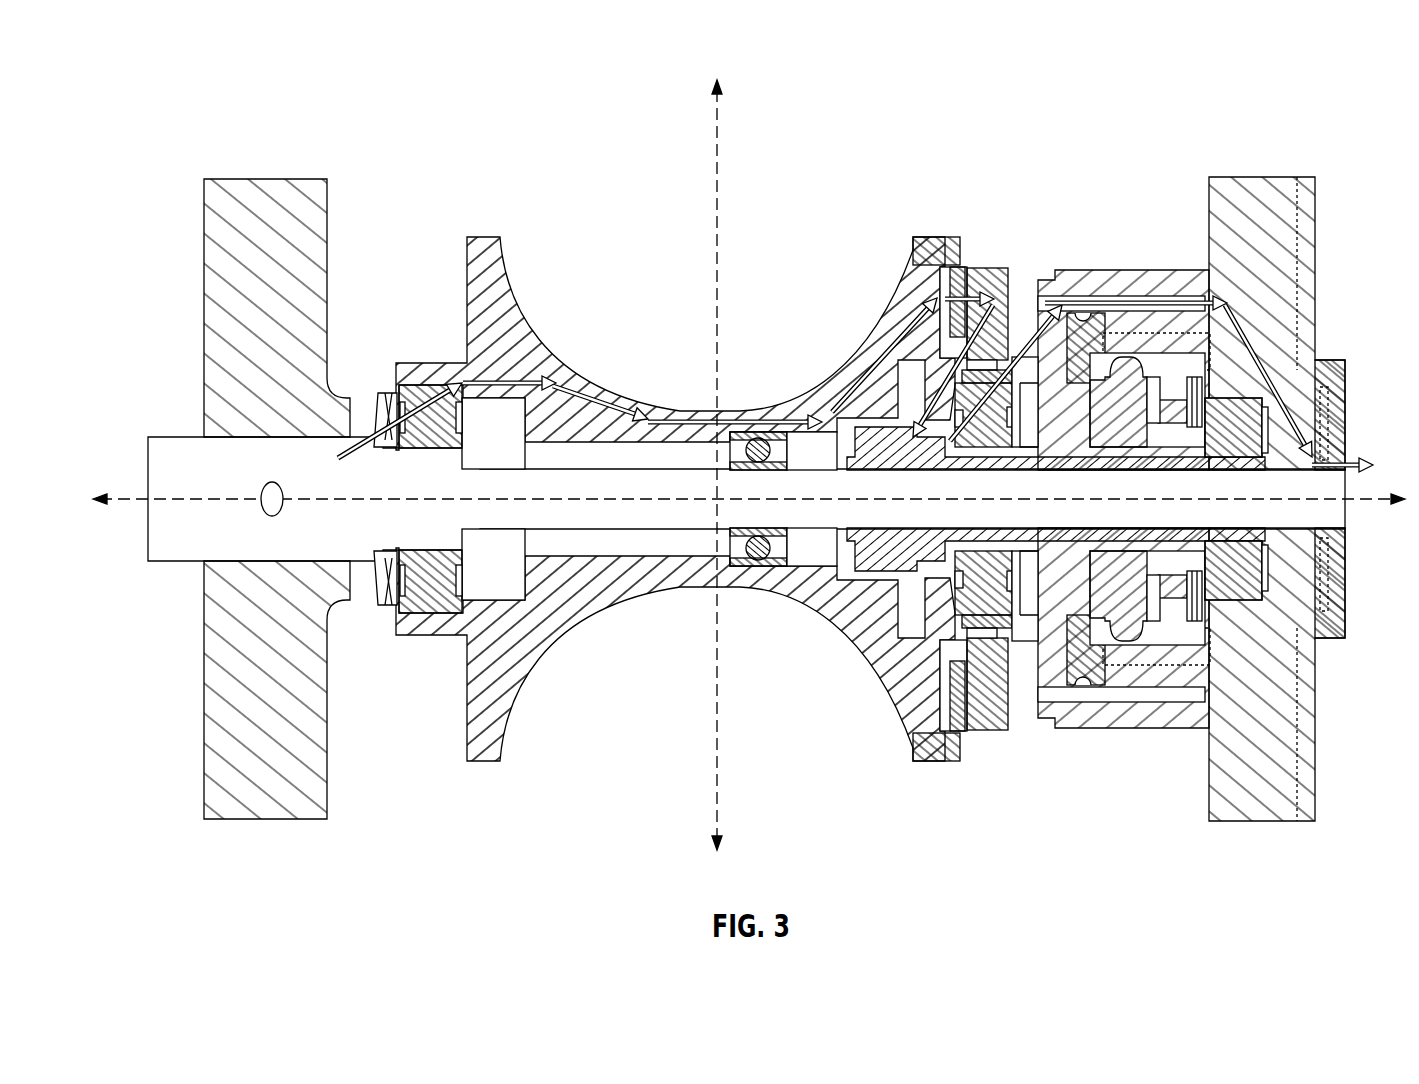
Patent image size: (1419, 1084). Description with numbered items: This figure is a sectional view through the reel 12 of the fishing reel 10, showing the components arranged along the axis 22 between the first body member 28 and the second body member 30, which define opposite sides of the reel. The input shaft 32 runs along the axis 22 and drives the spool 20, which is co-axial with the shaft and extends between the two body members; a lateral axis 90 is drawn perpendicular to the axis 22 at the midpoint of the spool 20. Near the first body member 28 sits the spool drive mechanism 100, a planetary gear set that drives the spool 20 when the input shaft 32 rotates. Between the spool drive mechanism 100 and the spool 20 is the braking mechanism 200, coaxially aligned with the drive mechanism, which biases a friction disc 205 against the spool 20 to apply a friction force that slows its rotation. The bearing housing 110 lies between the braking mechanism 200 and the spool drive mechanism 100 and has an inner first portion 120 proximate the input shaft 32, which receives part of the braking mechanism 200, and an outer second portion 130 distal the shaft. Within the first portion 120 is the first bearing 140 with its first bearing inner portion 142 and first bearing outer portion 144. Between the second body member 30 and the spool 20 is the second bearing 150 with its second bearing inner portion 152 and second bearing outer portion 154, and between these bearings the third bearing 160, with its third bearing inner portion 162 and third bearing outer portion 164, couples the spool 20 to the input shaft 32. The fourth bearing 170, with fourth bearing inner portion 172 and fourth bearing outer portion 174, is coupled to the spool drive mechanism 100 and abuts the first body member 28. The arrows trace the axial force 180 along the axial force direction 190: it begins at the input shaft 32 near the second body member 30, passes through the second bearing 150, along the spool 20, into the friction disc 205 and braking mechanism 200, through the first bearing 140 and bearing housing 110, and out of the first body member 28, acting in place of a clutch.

The fishing reel 10 is at (1212, 92).
The reel 12 is at (1262, 112).
The spool 20 is at (490, 236).
The axis 22 is at (1392, 508).
The first body member 28 is at (1312, 178).
The second body member 30 is at (228, 178).
The input shaft 32 is at (162, 563).
The lateral axis 90 is at (716, 226).
The spool drive mechanism 100 is at (1165, 730).
The bearing housing 110 is at (1036, 265).
The first portion 120 is at (977, 265).
The second portion 130 is at (1048, 265).
The first bearing 140 is at (950, 580).
The first bearing inner portion 142 is at (920, 543).
The first bearing outer portion 144 is at (975, 605).
The second bearing 150 is at (462, 613).
The second bearing inner portion 152 is at (425, 552).
The second bearing outer portion 154 is at (430, 613).
The third bearing 160 is at (745, 451).
The third bearing inner portion 162 is at (735, 465).
The third bearing outer portion 164 is at (778, 432).
The fourth bearing 170 is at (1265, 420).
The fourth bearing inner portion 172 is at (1250, 450).
The fourth bearing outer portion 174 is at (1243, 400).
The axial force 180 is at (358, 437).
The axial force direction 190 is at (365, 445).
The braking mechanism 200 is at (995, 265).
The friction disc 205 is at (913, 258).